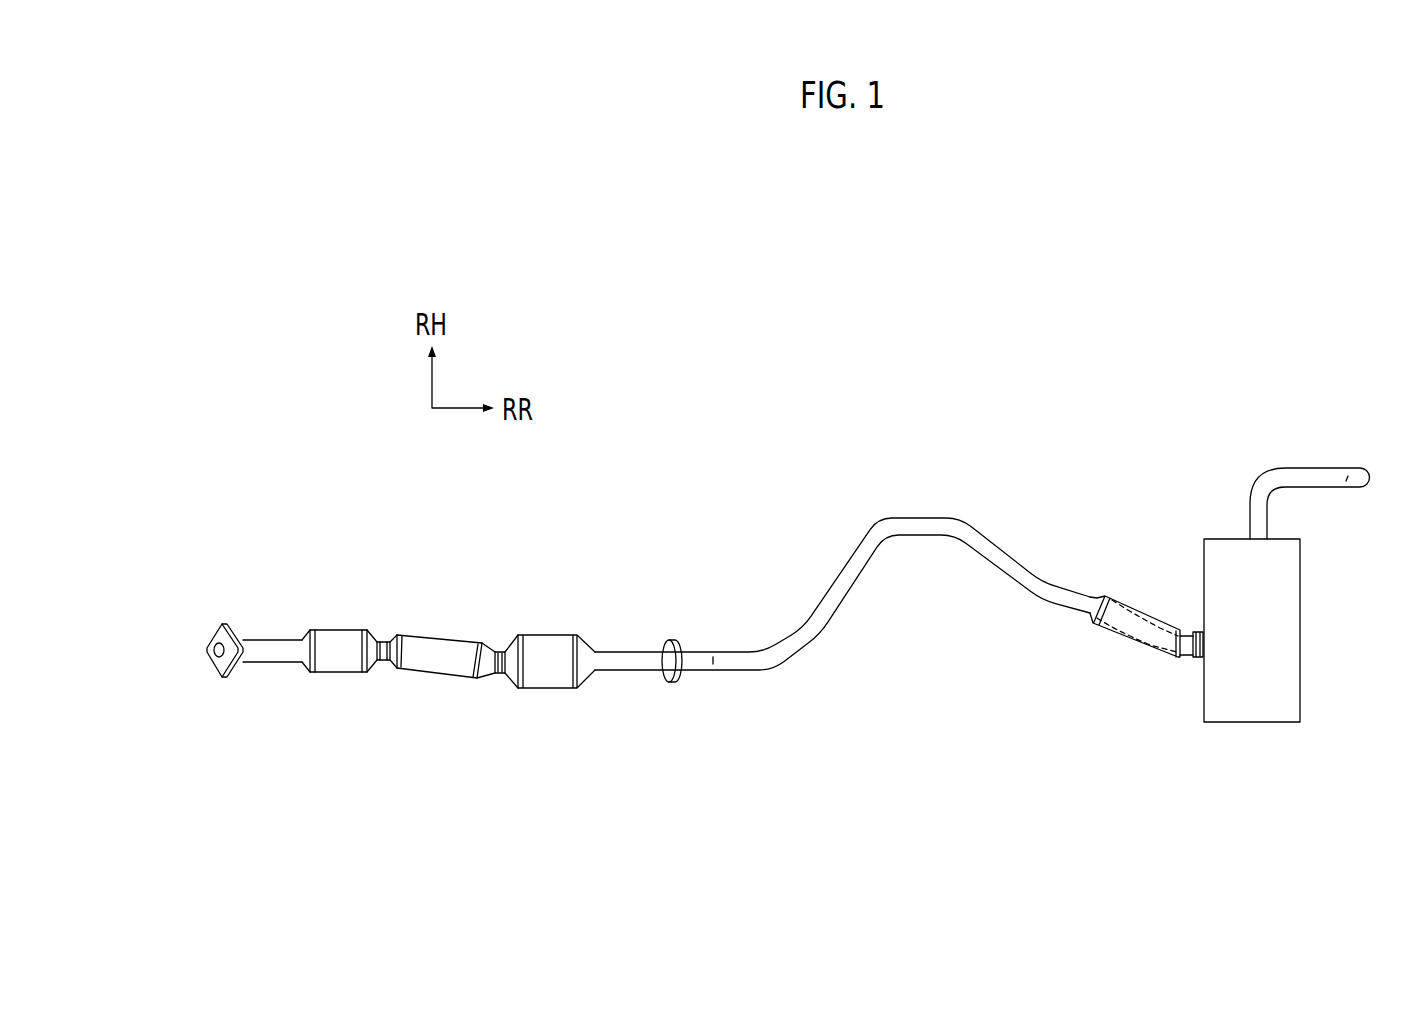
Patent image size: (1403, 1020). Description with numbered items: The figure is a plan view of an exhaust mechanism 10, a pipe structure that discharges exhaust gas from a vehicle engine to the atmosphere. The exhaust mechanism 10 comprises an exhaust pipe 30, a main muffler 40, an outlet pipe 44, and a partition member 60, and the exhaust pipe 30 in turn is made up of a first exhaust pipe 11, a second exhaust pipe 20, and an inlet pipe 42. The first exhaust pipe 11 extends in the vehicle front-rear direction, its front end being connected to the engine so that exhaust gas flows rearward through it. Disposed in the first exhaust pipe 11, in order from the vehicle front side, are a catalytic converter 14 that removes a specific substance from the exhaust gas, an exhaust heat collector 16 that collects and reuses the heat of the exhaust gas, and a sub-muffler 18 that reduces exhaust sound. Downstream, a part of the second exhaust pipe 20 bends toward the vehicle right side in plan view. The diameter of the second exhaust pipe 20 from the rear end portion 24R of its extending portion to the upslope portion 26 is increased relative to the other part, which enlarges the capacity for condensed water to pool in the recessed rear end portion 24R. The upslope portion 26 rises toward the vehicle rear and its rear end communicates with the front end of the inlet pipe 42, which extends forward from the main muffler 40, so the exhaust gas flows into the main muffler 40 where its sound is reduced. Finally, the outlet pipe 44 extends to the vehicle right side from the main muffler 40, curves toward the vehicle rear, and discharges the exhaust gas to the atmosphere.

The exhaust mechanism 10 is at (355, 468).
The first exhaust pipe 11 is at (272, 670).
The catalytic converter 14 is at (340, 627).
The exhaust heat collector 16 is at (438, 635).
The sub-muffler 18 is at (543, 635).
The second exhaust pipe 20 is at (813, 597).
The rear end portion 24R is at (1134, 664).
The upslope portion 26 is at (1188, 666).
The exhaust pipe 30 is at (268, 608).
The main muffler 40 is at (1248, 722).
The inlet pipe 42 is at (1195, 632).
The outlet pipe 44 is at (1312, 468).
The partition member 60 is at (1140, 620).